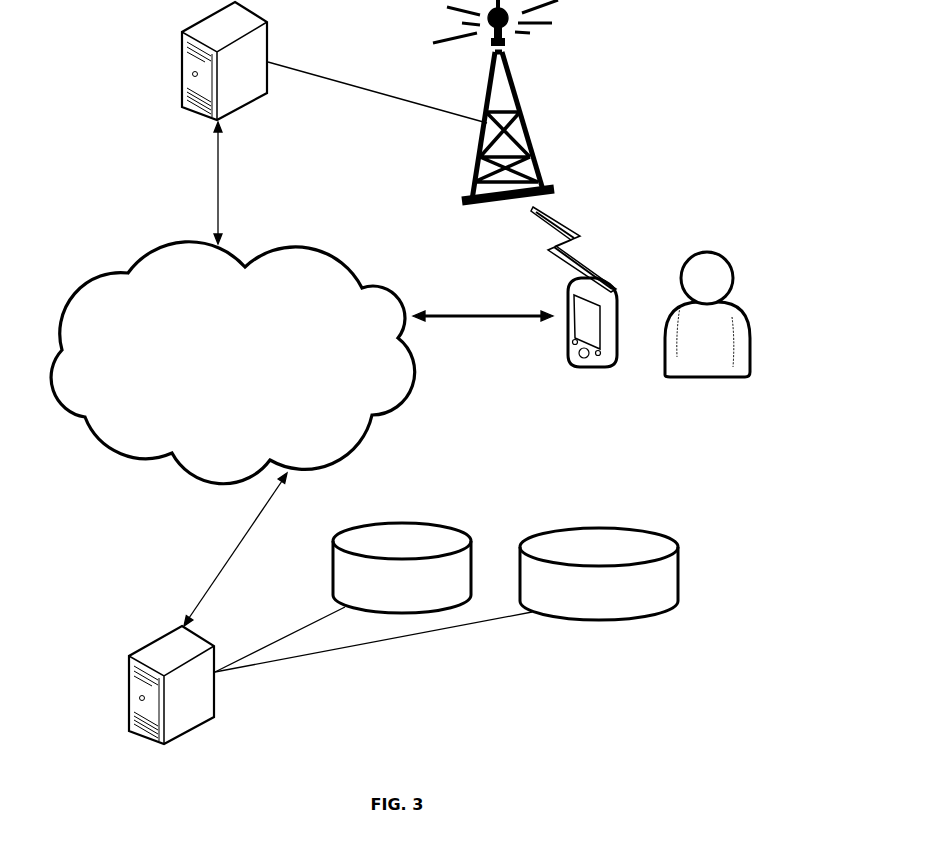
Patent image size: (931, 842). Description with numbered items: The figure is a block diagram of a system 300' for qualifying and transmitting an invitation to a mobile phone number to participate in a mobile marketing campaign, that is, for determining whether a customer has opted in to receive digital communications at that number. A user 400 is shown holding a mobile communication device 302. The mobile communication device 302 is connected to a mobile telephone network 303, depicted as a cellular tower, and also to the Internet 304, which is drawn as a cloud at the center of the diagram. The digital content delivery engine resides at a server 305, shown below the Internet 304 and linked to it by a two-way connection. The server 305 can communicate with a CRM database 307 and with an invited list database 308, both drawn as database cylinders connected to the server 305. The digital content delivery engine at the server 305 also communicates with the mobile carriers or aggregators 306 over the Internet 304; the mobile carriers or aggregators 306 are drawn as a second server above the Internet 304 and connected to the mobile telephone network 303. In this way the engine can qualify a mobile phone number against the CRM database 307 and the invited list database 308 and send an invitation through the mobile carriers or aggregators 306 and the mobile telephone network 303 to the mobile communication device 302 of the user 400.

The mobile communication device 302 is at (596, 341).
The mobile telephone network 303 is at (516, 100).
The Internet 304 is at (416, 381).
The server 305 is at (183, 690).
The mobile carriers or aggregators 306 is at (168, 72).
The CRM database 307 is at (402, 569).
The invited list database 308 is at (599, 574).
The system 300' is at (583, 474).
The user 400 is at (734, 314).